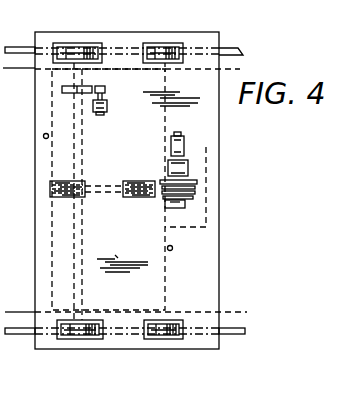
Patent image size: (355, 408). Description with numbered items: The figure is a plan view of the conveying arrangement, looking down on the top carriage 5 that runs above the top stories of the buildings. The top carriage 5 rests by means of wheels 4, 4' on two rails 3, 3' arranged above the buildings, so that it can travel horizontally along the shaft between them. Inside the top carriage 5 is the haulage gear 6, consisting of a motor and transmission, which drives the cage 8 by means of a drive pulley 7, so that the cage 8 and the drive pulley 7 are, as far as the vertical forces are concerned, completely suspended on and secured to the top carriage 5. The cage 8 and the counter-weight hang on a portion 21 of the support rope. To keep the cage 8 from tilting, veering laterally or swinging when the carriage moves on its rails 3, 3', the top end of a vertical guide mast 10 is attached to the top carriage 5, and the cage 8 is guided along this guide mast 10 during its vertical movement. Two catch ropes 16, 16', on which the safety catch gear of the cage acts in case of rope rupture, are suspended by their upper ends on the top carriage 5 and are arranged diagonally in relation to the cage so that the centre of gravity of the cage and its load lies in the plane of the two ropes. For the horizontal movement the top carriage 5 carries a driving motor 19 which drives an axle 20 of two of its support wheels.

The rail 3 is at (124, 39).
The rail 3' is at (125, 347).
The wheel 4 is at (118, 35).
The wheel 4' is at (120, 343).
The top carriage 5 is at (220, 258).
The haulage gear 6 is at (188, 165).
The drive pulley 7 is at (185, 206).
The cage 8 is at (168, 118).
The guide mast 10 is at (210, 208).
The catch rope 16 is at (26, 137).
The catch rope 16' is at (184, 261).
The driving motor 19 is at (112, 101).
The axle 20 is at (85, 250).
The portion of a support rope 21 is at (91, 204).